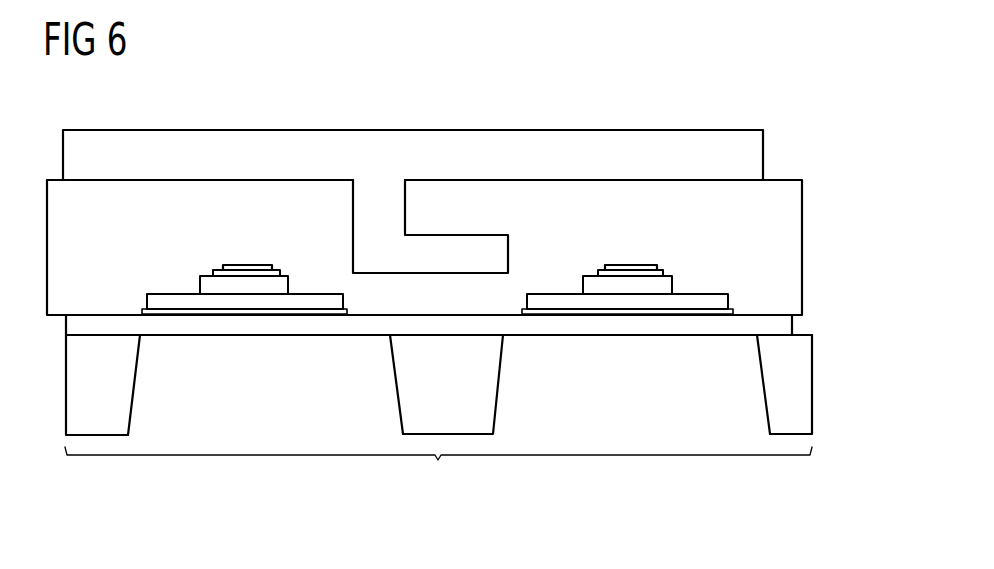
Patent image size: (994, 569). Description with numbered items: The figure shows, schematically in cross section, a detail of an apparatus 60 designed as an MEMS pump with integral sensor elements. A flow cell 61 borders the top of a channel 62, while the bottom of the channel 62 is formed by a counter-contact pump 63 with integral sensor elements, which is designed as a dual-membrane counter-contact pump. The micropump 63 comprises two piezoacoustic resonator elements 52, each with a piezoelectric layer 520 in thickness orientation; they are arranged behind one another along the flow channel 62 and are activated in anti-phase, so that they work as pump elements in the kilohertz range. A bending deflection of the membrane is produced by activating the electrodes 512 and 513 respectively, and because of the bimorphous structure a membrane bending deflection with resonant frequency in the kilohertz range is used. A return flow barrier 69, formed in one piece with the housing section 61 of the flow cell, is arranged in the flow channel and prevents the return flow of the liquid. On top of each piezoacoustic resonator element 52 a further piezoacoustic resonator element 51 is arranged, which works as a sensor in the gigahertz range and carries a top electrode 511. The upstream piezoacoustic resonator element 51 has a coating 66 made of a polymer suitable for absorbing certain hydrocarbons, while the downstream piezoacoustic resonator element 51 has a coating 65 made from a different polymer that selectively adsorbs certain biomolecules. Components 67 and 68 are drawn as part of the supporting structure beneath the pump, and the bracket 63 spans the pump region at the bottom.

The apparatus 60 is at (766, 82).
The flow cell 61 is at (532, 142).
The channel 62 is at (451, 247).
The counter-contact pump 63 is at (438, 470).
The coating 65 is at (237, 262).
The coating 66 is at (622, 262).
The insulating layer 67 is at (780, 328).
The cooling fin / pin 68 is at (798, 386).
The return flow barrier 69 is at (472, 253).
The piezoacoustic resonator element 51 is at (465, 240).
The electrode 511 is at (278, 268).
The electrode 512 is at (292, 290).
The electrode 513 is at (247, 312).
The piezoacoustic resonator element 52 is at (359, 301).
The piezoelectric layer 520 is at (173, 300).